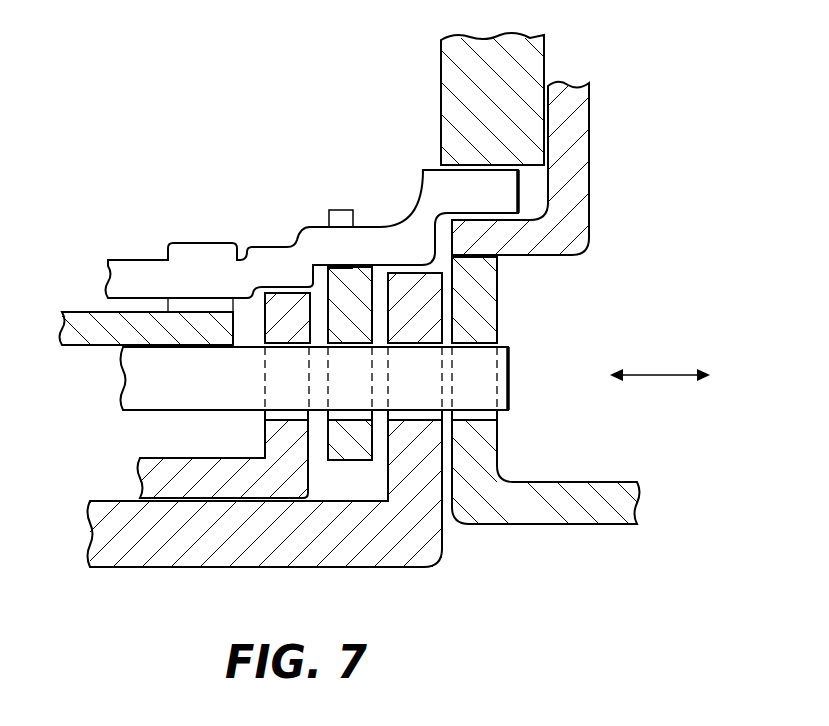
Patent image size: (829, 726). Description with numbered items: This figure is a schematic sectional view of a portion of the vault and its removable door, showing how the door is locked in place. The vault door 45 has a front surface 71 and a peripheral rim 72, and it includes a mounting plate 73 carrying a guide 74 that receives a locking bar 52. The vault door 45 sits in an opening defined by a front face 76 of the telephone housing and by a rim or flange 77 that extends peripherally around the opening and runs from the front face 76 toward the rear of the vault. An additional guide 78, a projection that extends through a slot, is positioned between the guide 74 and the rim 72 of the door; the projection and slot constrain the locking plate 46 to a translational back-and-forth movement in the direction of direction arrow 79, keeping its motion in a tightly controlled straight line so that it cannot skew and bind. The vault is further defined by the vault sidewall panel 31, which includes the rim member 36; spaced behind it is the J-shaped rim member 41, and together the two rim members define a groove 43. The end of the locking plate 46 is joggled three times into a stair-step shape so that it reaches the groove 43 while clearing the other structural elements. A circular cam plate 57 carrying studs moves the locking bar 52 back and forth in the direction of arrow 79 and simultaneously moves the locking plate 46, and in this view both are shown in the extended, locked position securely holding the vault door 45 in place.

The J-shaped rim member 41 is at (460, 100).
The vault sidewall panel 31 is at (575, 157).
The rim member 36 is at (513, 233).
The groove 43 is at (533, 192).
The locking plate 46 is at (127, 277).
The cam plate 57 is at (85, 327).
The guide 74 is at (287, 437).
The mounting plate 73 is at (175, 477).
The additional guide 78 is at (338, 283).
The peripheral rim 72 is at (420, 300).
The rim or flange 77 is at (475, 448).
The front face 76 is at (549, 538).
The vault door 45 is at (117, 536).
The front surface 71 is at (157, 578).
The locking bar 52 is at (480, 373).
The direction arrow 79 is at (663, 377).